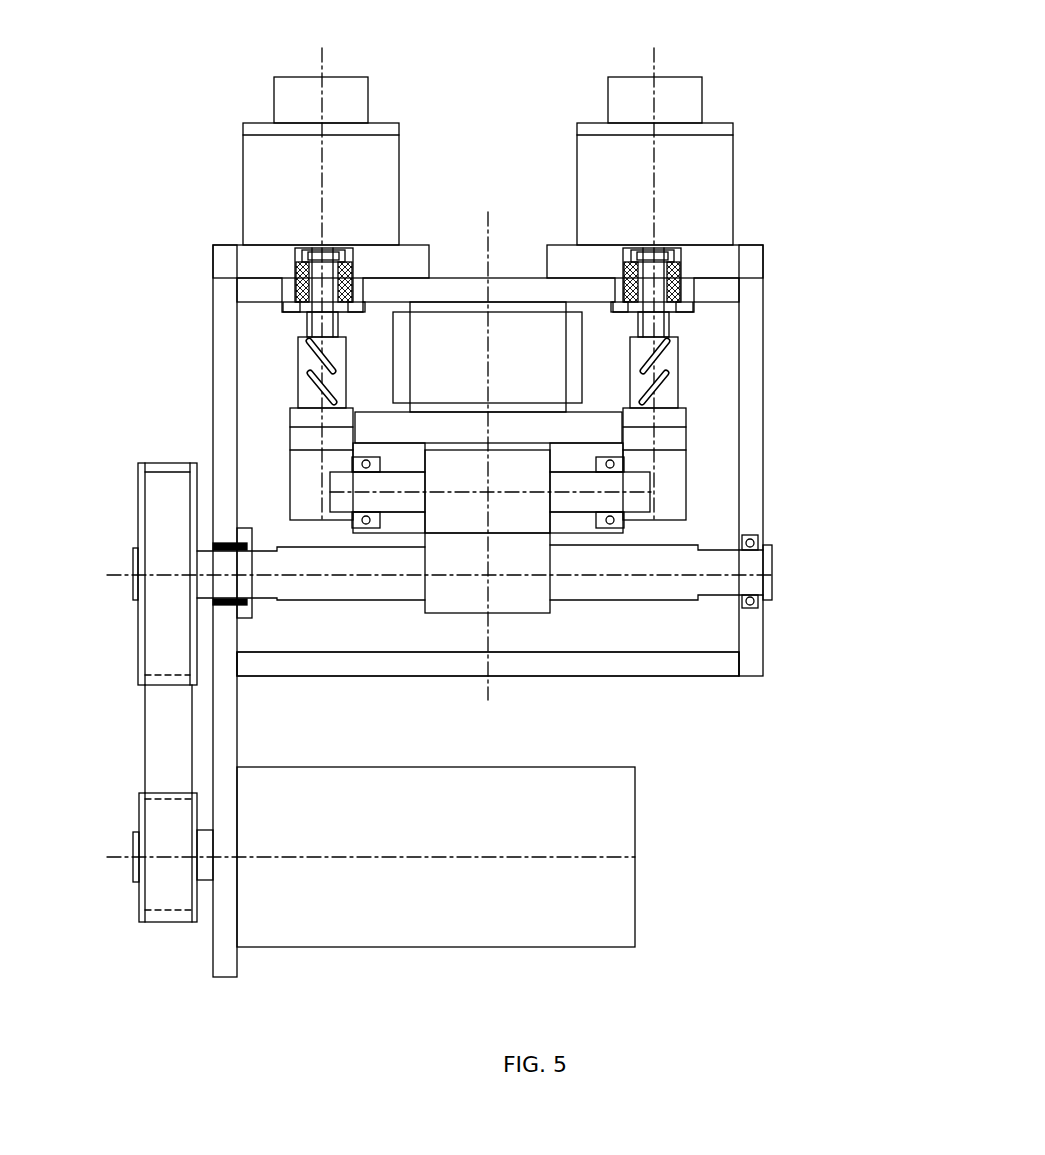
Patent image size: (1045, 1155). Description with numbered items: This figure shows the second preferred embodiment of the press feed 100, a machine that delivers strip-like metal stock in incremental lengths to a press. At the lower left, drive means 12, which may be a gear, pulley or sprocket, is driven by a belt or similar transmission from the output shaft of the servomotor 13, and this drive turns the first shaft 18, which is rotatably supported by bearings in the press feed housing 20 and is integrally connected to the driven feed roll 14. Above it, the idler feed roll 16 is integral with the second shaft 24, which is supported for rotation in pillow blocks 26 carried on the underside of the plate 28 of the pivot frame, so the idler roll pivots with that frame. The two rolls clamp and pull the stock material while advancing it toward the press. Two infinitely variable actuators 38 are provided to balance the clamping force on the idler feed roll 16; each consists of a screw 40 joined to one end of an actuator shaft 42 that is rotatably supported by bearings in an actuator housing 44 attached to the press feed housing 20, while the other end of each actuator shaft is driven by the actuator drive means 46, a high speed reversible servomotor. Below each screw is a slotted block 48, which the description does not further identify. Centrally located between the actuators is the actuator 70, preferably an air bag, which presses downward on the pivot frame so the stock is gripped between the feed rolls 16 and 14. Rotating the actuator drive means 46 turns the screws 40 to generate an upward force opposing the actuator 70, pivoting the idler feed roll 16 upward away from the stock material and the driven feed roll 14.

The drive means 12 is at (135, 648).
The servomotor 13 is at (637, 826).
The feed roll 14 is at (505, 617).
The feed roll 16 is at (463, 527).
The first shaft 18 is at (362, 603).
The press feed housing 20 is at (763, 660).
The second shaft 24 is at (320, 482).
The pillow blocks 26 is at (325, 485).
The plate 28 is at (627, 423).
The infinitely variable actuators 38 is at (240, 246).
The screws 40 is at (293, 322).
The actuator shafts 42 is at (290, 270).
The actuator housings 44 is at (207, 270).
The actuator drive means 46 is at (238, 158).
The slotted adjusting block 48 is at (297, 378).
The actuator 70 is at (463, 300).
The press feed 100 is at (687, 677).